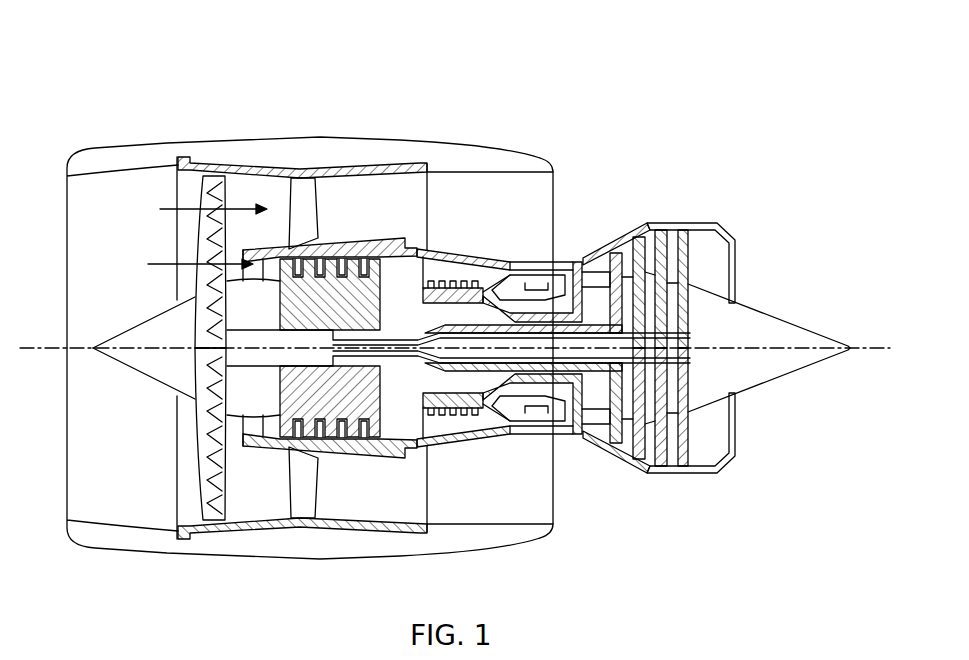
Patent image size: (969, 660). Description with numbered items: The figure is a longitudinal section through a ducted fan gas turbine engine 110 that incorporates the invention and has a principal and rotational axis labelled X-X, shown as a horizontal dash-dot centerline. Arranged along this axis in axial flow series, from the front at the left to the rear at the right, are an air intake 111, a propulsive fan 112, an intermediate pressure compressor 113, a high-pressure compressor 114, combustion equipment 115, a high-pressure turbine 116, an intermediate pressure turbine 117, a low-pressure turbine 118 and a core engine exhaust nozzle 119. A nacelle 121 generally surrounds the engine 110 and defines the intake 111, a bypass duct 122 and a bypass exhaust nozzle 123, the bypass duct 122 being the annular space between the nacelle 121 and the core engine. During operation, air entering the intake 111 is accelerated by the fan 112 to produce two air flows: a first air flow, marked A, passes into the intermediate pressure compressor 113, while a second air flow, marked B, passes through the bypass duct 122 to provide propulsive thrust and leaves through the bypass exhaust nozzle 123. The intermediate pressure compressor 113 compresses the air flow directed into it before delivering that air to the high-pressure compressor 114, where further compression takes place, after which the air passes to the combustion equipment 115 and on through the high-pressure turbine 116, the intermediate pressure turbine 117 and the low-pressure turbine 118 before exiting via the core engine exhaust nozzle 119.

The ducted fan gas turbine engine 110 is at (118, 106).
The air intake 111 is at (120, 171).
The propulsive fan 112 is at (203, 479).
The intermediate pressure compressor 113 is at (350, 440).
The high-pressure compressor 114 is at (456, 270).
The combustion equipment 115 is at (520, 417).
The high-pressure turbine 116 is at (570, 438).
The intermediate pressure turbine 117 is at (613, 245).
The low-pressure turbine 118 is at (627, 462).
The core engine exhaust nozzle 119 is at (724, 227).
The nacelle 121 is at (351, 151).
The bypass duct 122 is at (524, 209).
The bypass exhaust nozzle 123 is at (554, 168).